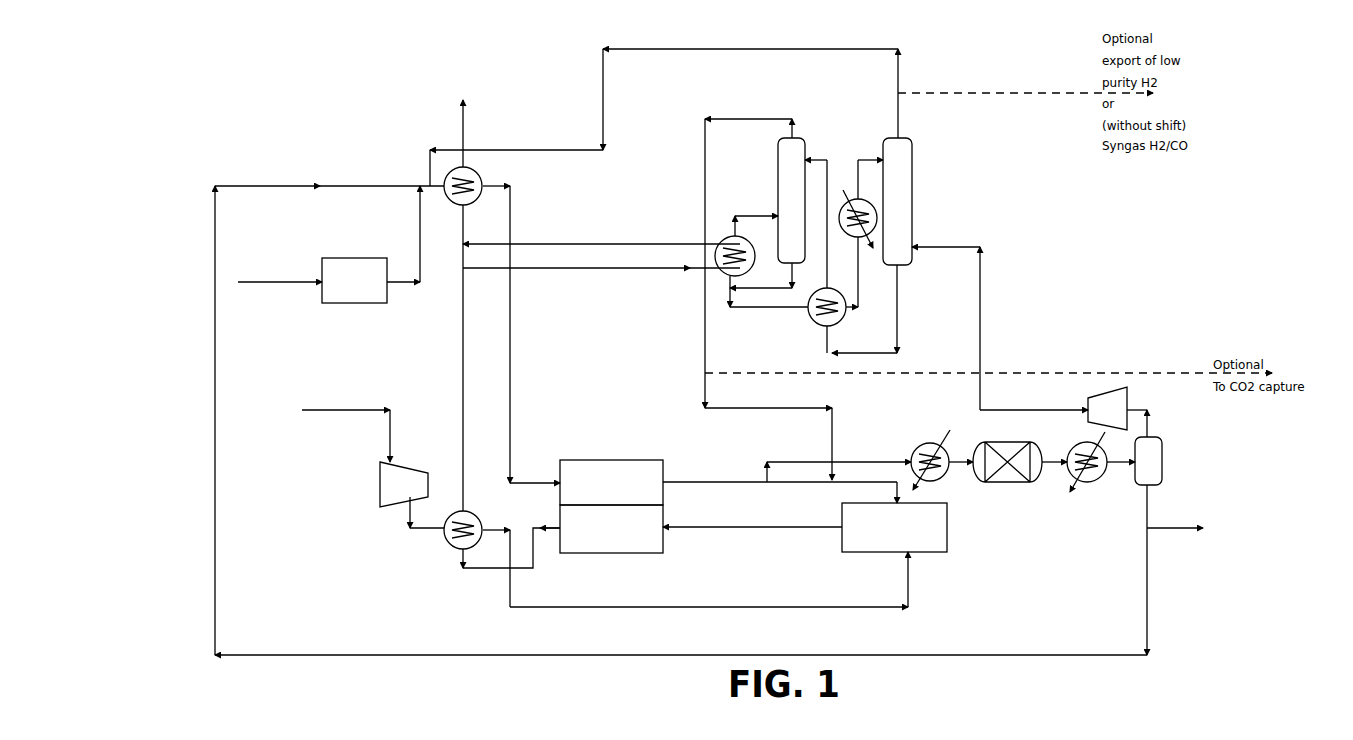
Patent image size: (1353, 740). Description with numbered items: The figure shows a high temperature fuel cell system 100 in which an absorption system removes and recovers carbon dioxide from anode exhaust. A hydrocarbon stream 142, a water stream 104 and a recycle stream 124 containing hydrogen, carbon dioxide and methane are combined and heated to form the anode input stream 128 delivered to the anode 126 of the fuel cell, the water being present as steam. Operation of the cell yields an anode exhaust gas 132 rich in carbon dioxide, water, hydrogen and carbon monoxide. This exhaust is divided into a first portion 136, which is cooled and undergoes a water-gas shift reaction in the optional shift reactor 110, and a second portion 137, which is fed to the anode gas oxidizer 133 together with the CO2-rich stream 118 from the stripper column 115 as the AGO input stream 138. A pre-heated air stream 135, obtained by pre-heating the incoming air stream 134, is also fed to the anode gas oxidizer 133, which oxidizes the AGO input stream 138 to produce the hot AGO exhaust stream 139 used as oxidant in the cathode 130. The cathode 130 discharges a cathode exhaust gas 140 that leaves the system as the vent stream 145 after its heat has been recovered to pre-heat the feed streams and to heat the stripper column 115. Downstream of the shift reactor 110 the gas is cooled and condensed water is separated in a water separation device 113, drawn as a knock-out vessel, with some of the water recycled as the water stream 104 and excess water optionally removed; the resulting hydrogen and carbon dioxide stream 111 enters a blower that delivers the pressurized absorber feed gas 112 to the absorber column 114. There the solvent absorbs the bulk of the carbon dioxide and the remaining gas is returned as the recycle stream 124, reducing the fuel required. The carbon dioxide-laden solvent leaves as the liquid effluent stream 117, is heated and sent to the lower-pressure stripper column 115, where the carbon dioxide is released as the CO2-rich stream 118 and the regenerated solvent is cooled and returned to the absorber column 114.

The high temperature fuel cell system 100 is at (681, 327).
The water stream 104 is at (329, 189).
The shift reactor 110 is at (1038, 484).
The stream 111 is at (1088, 412).
The pressurized absorber feed gas 112 is at (952, 312).
The separator vessel A 113 is at (1178, 492).
The absorber column 114 is at (860, 201).
The stripper column 115 is at (778, 222).
The liquid effluent stream 117 is at (837, 299).
The CO2-rich stream 118 is at (724, 263).
The stream including hydrogen, carbon dioxide, and methane 124 is at (664, 109).
The anode 126 is at (657, 458).
The anode input stream 128 is at (620, 241).
The cathode 130 is at (637, 553).
The anode exhaust gas 132 is at (780, 478).
The anode gas oxidizer 133 is at (917, 539).
The air stream 134 is at (373, 459).
The pre-heated air stream 135 is at (709, 579).
The first portion 136 is at (915, 475).
The second portion 137 is at (785, 487).
The AGO input stream 138 is at (850, 487).
The AGO exhaust stream 139 is at (752, 543).
The cathode exhaust gas 140 is at (502, 559).
The hydrocarbon stream 142 is at (329, 250).
The vent stream 145 is at (502, 290).